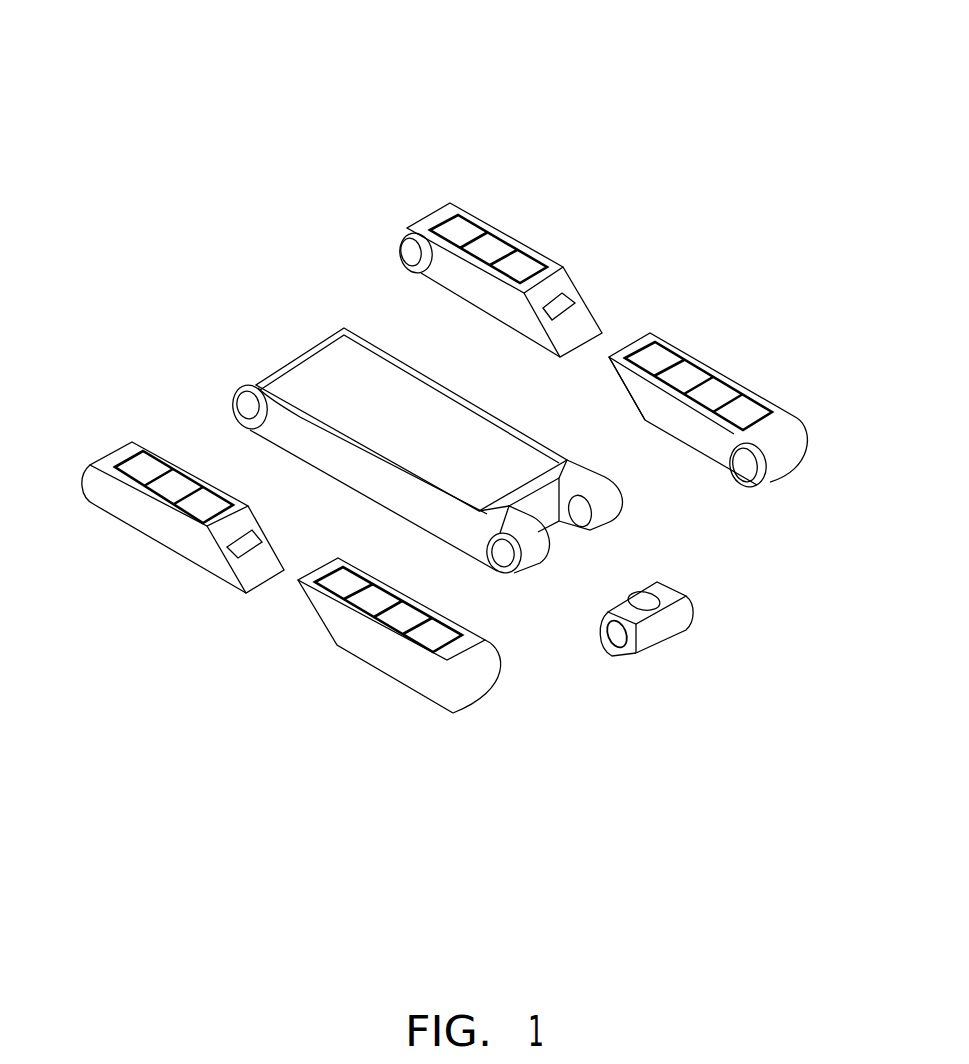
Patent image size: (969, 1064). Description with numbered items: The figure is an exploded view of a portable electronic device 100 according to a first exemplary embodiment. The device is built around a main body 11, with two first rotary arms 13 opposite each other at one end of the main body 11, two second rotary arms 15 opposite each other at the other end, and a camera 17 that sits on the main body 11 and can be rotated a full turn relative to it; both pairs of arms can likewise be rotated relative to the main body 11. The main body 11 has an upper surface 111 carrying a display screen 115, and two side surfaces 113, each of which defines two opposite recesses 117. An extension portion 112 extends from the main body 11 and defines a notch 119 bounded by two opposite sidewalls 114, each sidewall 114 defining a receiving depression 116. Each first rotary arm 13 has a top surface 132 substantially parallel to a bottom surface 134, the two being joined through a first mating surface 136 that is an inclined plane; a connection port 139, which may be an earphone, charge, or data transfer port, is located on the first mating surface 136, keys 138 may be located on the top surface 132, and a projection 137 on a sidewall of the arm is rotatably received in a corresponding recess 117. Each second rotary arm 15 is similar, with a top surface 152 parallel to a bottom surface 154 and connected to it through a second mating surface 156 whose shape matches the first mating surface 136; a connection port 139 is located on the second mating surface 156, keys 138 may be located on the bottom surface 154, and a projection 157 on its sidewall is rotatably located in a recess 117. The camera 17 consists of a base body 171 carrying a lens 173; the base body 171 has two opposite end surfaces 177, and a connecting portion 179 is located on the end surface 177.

The portable electronic device 100 is at (476, 27).
The main body 11 is at (291, 338).
The upper surface 111 is at (343, 333).
The extension portion 112 is at (473, 513).
The side surface 113 is at (325, 457).
The sidewall 114 is at (593, 511).
The display screen 115 is at (405, 443).
The receiving depression 116 is at (583, 517).
The recess 117 is at (252, 408).
The notch 119 is at (547, 504).
The first rotary arm 13 is at (477, 200).
The top surface 132 is at (165, 461).
The bottom surface 134 is at (183, 562).
The first mating surface 136 is at (255, 574).
The projection 137 is at (397, 258).
The keys 138 is at (130, 468).
The connection port 139 is at (575, 300).
The second rotary arm 15 is at (720, 359).
The top surface 152 is at (662, 439).
The bottom surface 154 is at (635, 343).
The second mating surface 156 is at (608, 377).
The projection 157 is at (748, 485).
The camera 17 is at (701, 590).
The base body 171 is at (672, 622).
The lens 173 is at (645, 600).
The end surface 177 is at (628, 648).
The connecting portion 179 is at (615, 633).